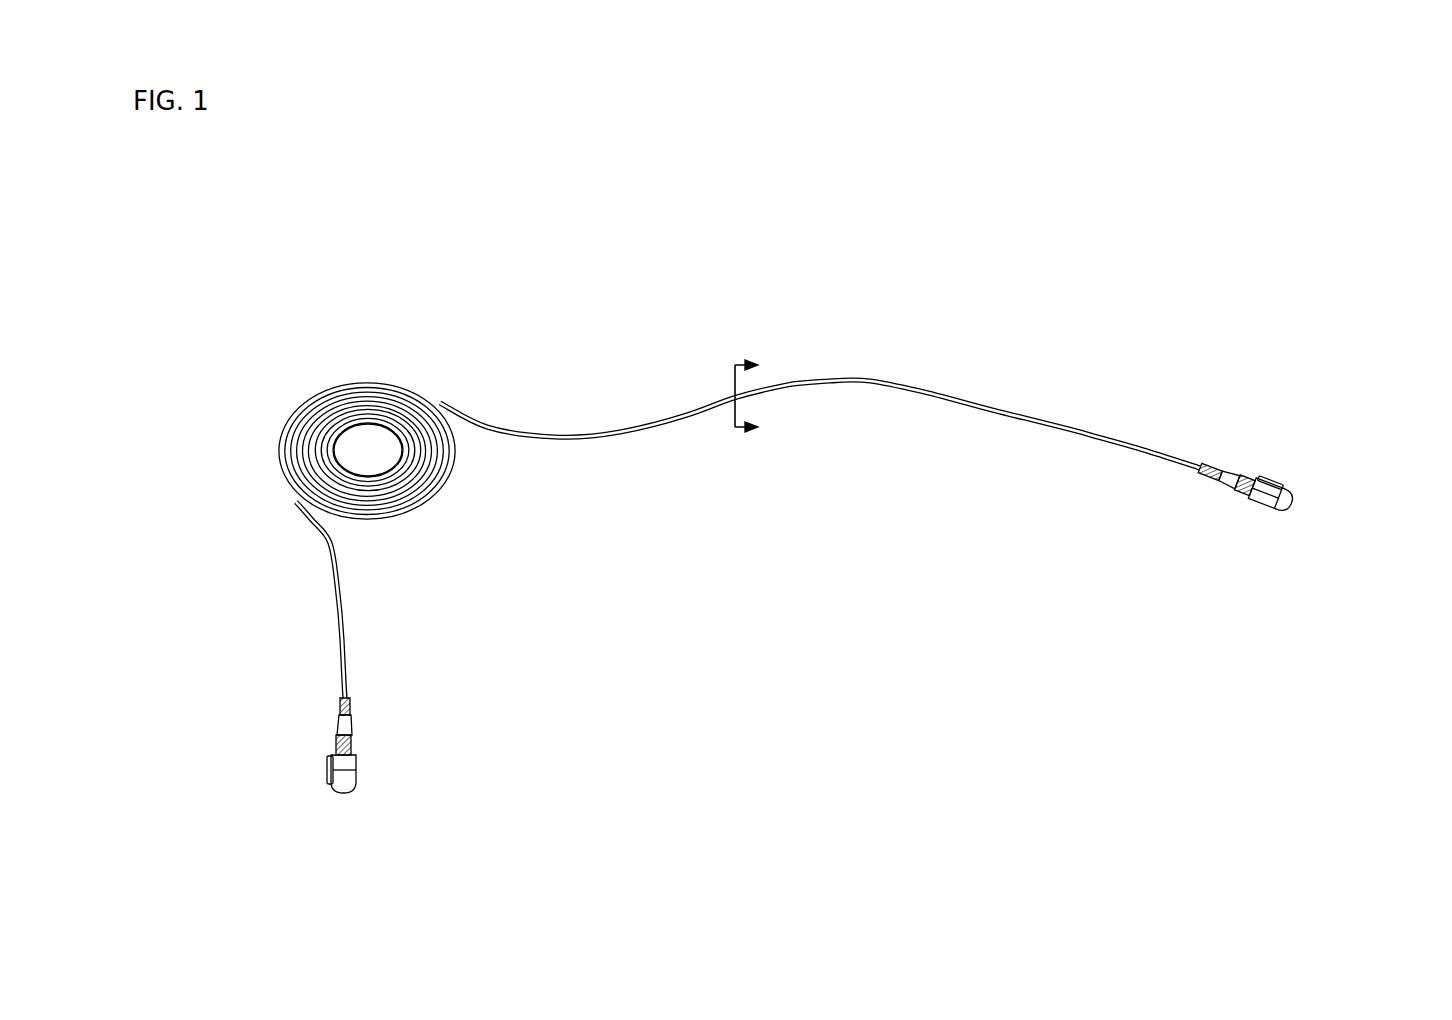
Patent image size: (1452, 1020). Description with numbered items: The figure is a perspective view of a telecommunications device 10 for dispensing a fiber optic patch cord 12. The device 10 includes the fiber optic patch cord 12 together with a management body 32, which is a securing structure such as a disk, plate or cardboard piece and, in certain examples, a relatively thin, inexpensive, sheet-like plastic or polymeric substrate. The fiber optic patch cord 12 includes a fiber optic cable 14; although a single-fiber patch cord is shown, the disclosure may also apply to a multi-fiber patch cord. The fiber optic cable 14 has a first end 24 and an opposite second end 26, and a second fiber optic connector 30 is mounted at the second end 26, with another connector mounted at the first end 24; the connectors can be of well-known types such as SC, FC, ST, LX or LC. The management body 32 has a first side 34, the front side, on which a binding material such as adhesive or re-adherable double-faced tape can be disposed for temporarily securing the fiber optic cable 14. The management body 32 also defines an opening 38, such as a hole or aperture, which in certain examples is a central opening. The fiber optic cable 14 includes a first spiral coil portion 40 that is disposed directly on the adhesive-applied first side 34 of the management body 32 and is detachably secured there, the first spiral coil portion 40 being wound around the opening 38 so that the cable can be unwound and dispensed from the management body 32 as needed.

The telecommunications device 10 is at (672, 287).
The fiber optic patch cord 12 is at (416, 420).
The fiber optic cable 14 is at (848, 378).
The first end 24 is at (1317, 405).
The second end 26 is at (325, 745).
The second fiber optic connector 30 is at (355, 745).
The management body 32 is at (416, 431).
The first side 34 is at (450, 445).
The opening 38 is at (372, 456).
The first spiral coil portion 40 is at (332, 422).